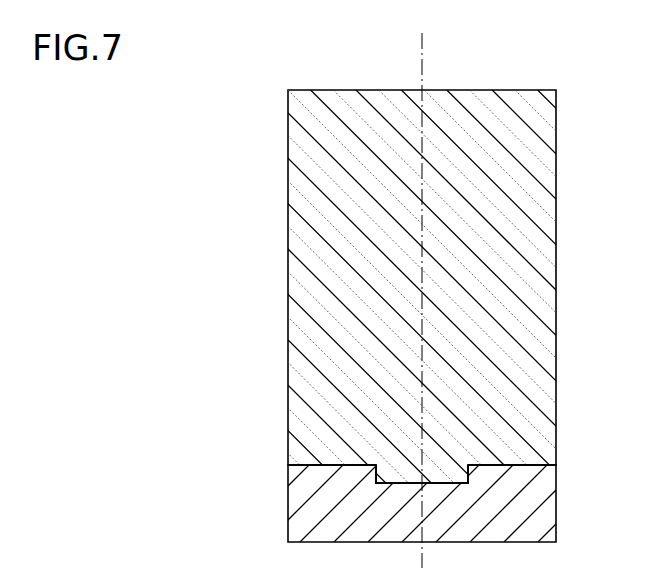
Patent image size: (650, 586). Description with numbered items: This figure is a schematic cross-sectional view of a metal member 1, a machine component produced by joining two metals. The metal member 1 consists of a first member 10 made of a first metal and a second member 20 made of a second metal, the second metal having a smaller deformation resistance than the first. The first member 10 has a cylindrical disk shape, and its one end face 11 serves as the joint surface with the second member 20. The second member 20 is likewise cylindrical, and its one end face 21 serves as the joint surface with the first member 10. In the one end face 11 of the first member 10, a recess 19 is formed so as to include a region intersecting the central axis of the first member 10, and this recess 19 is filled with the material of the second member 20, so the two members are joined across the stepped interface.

The metal member 1 is at (578, 75).
The first member 10 is at (543, 500).
The one end face 11 is at (527, 464).
The recess 19 is at (440, 473).
The second member 20 is at (540, 285).
The one end face 21 is at (318, 467).